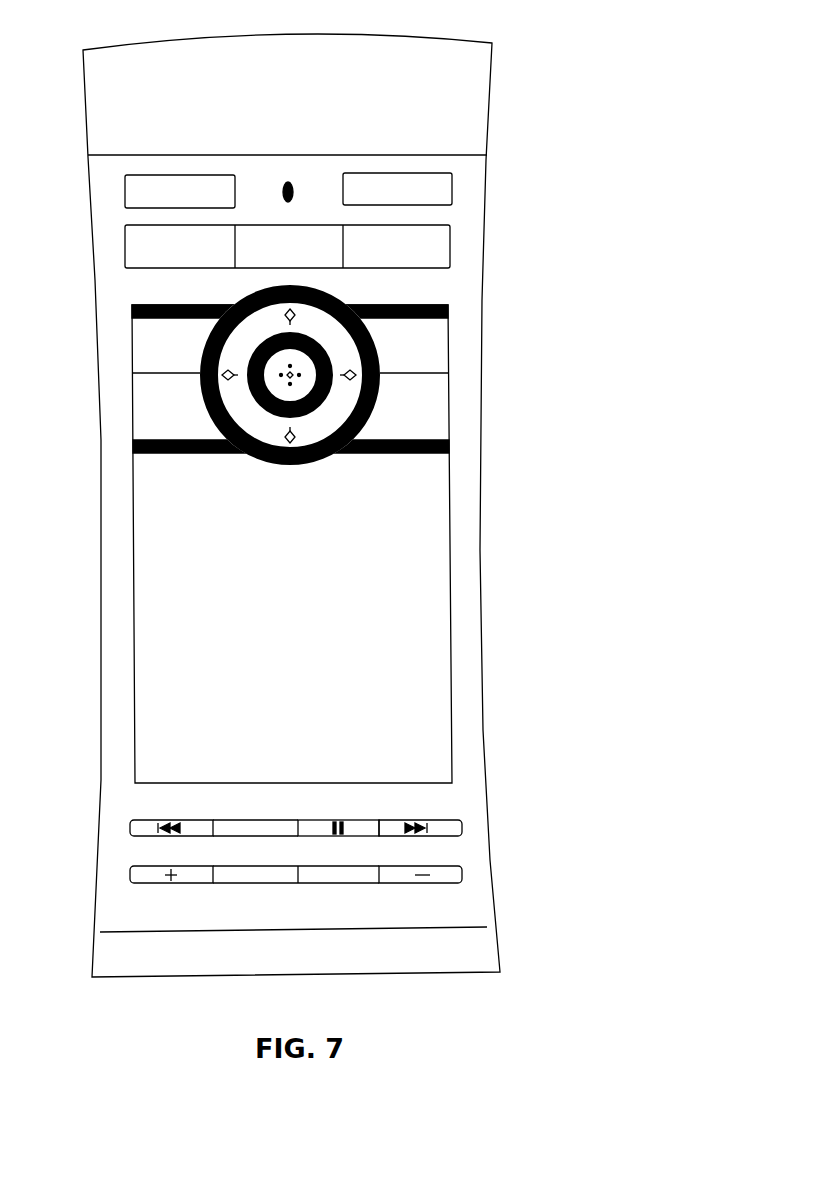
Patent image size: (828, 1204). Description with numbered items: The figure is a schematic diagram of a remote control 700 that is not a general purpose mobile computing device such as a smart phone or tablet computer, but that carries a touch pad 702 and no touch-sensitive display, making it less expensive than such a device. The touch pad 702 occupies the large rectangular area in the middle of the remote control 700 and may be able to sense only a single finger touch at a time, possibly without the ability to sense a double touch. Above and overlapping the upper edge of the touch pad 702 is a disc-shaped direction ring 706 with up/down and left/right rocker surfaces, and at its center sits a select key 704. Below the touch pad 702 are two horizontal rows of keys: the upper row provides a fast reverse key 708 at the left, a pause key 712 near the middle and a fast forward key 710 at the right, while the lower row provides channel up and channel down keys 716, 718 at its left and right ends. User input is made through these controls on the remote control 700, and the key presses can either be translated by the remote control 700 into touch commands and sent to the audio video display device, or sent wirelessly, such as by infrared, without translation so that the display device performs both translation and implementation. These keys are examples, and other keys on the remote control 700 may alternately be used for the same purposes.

The remote control 700 is at (564, 84).
The touch pad 702 is at (404, 627).
The center select key 704 is at (307, 368).
The direction ring 706 is at (343, 410).
The fast reverse key 708 is at (128, 826).
The fast forward key 710 is at (460, 824).
The pause key 712 is at (366, 823).
The channel up key 716 is at (128, 878).
The channel down key 718 is at (460, 873).